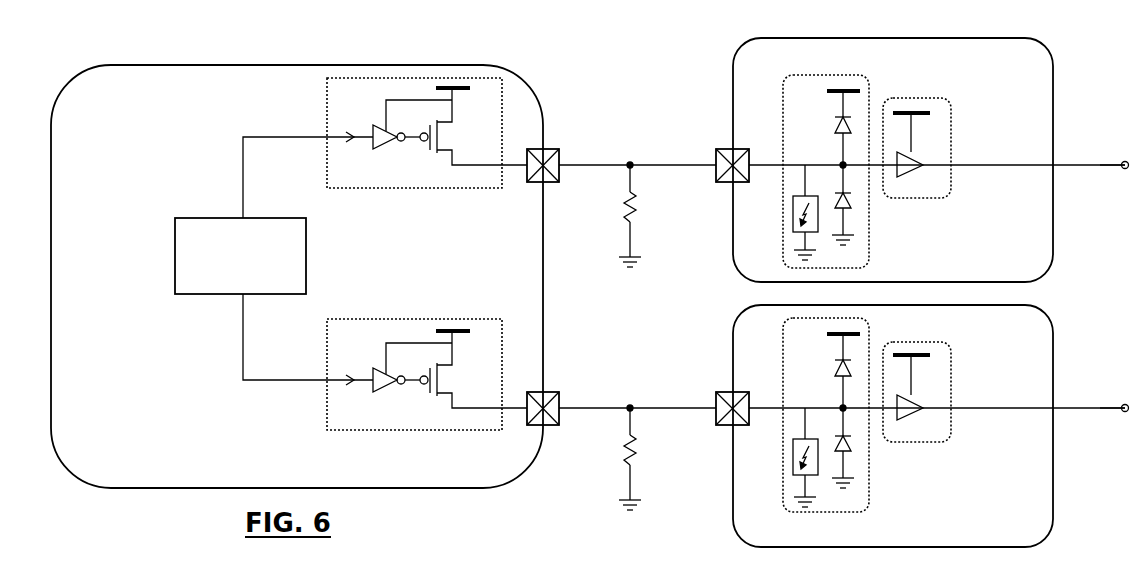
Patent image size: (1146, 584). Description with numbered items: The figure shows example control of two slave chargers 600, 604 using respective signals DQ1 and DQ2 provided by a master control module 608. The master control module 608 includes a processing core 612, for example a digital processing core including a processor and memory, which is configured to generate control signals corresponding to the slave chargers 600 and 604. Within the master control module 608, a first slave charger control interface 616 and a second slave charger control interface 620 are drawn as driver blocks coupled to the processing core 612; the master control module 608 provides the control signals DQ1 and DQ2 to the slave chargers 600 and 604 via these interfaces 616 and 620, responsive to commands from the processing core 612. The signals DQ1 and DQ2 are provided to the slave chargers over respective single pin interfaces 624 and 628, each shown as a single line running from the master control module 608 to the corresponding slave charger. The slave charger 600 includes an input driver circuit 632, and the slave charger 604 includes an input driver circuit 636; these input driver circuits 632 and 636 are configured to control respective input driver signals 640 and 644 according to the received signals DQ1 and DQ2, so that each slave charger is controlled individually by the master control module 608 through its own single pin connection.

The slave charger 600 is at (922, 141).
The slave charger 604 is at (900, 426).
The master control module 608 is at (533, 96).
The processing core 612 is at (174, 257).
The first slave charger control interface 616 is at (390, 188).
The second slave charger control interface 620 is at (430, 318).
The single pin interface 624 is at (665, 112).
The single pin interface 628 is at (625, 352).
The input driver circuit 632 is at (951, 223).
The input driver circuit 636 is at (951, 478).
The input driver signal 640 is at (1125, 161).
The input driver signal 644 is at (1125, 404).